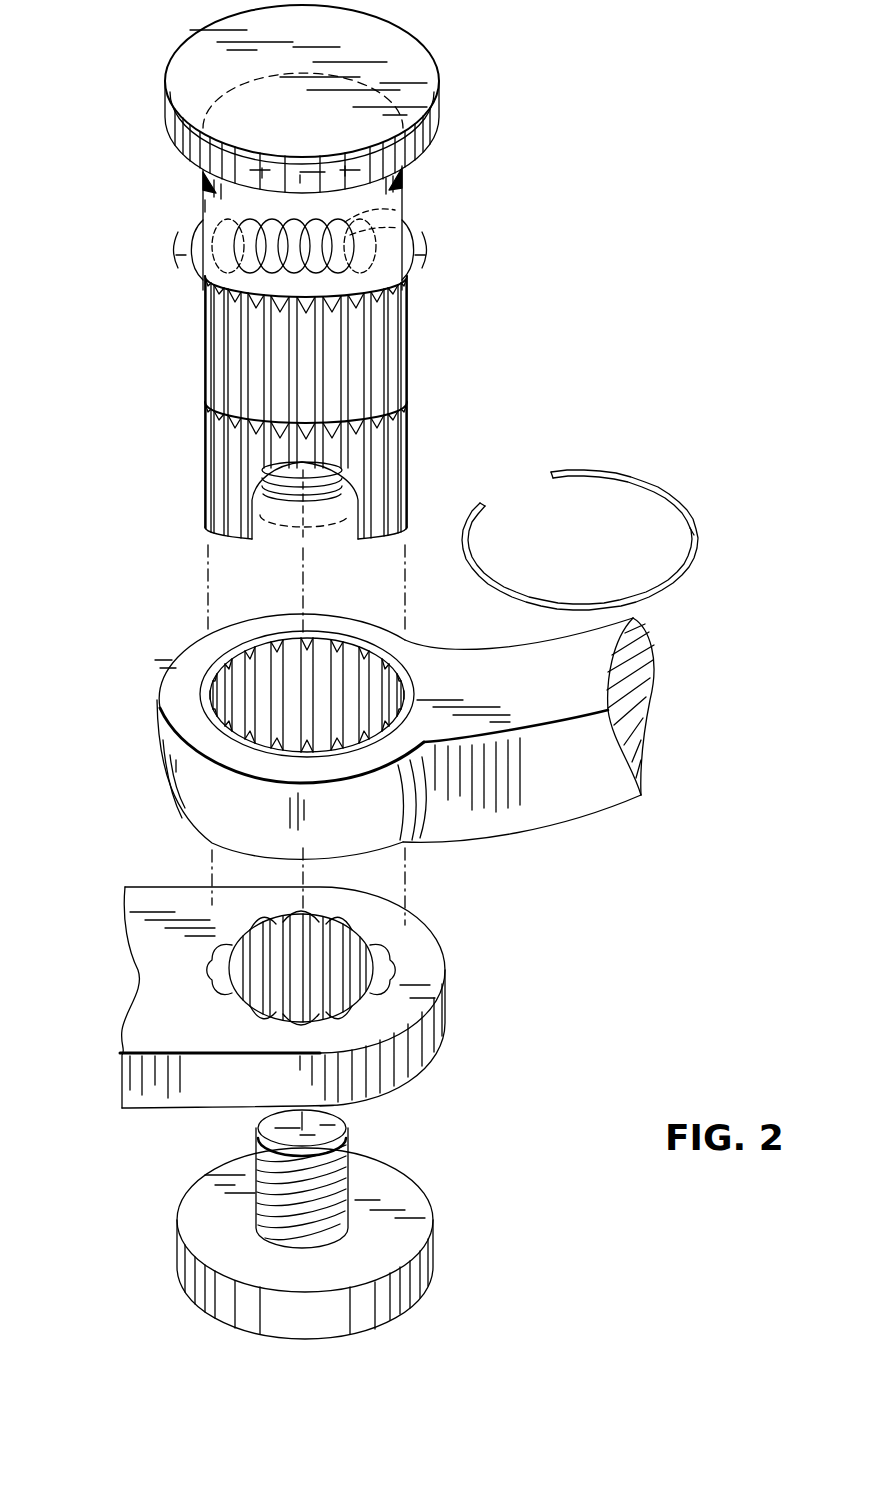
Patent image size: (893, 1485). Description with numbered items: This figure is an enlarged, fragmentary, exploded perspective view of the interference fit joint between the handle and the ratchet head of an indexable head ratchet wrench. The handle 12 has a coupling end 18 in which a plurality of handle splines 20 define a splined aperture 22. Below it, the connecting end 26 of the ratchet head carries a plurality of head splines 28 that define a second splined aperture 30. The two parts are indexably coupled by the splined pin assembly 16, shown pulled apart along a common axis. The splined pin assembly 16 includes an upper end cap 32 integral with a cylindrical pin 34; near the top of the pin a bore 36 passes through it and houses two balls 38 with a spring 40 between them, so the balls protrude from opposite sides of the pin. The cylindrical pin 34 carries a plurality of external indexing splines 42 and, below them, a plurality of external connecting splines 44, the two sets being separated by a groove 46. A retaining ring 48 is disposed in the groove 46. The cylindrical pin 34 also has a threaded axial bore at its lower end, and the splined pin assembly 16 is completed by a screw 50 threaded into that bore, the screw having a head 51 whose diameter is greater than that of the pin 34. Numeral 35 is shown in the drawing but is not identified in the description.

The handle 12 is at (374, 731).
The splined pin assembly 16 is at (603, 902).
The coupling end 18 is at (192, 792).
The handle splines 20 is at (262, 655).
The splined aperture 22 is at (254, 671).
The connecting end 26 is at (402, 1068).
The head splines 28 is at (289, 966).
The splined aperture 30 is at (255, 970).
The upper end cap 32 is at (432, 118).
The cylindrical pin 34 is at (375, 197).
The neck groove 35 is at (230, 197).
The bore 36 is at (428, 219).
The balls 38 is at (170, 257).
The spring 40 is at (298, 413).
The external indexing splines 42 is at (372, 372).
The external connecting splines 44 is at (217, 533).
The groove 46 is at (205, 402).
The retaining ring 48 is at (663, 575).
The screw 50 is at (300, 1224).
The head 51 is at (178, 1273).